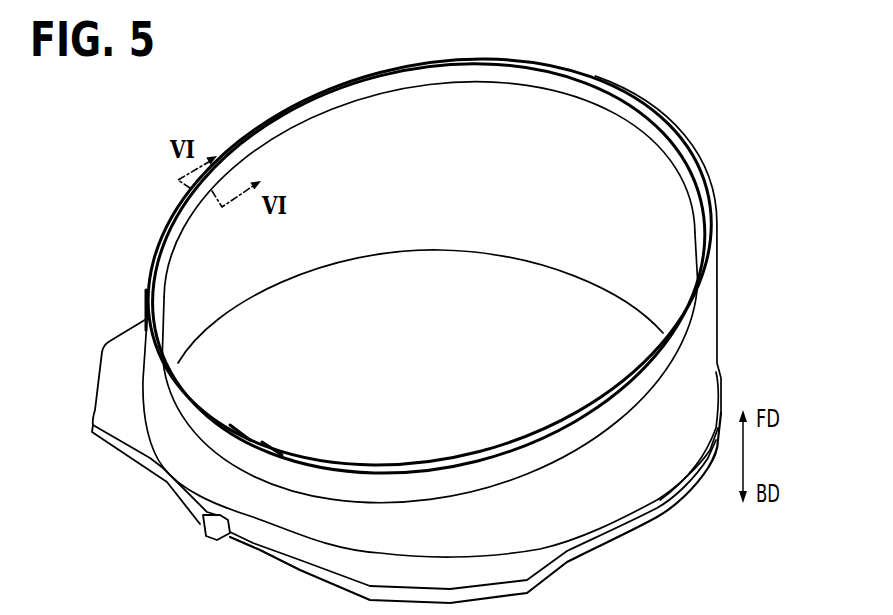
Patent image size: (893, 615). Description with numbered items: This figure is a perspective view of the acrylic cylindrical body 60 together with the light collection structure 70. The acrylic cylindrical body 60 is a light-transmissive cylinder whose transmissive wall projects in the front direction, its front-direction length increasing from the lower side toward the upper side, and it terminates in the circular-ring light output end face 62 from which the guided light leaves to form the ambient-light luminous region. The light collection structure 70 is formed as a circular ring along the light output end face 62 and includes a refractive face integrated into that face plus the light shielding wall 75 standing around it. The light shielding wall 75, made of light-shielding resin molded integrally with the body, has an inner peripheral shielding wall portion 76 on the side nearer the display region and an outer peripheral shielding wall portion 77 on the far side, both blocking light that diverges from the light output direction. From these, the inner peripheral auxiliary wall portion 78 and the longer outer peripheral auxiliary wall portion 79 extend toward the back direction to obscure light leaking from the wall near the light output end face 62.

The light collection structure 70 is at (451, 301).
The inner peripheral auxiliary wall portion 78 is at (558, 88).
The acrylic cylindrical body 60 is at (716, 333).
The light output end face 62 is at (148, 294).
The light shielding wall 75 is at (290, 388).
The inner peripheral shielding wall portion 76 is at (271, 447).
The outer peripheral shielding wall portion 77 is at (243, 443).
The outer peripheral auxiliary wall portion 79 is at (287, 483).